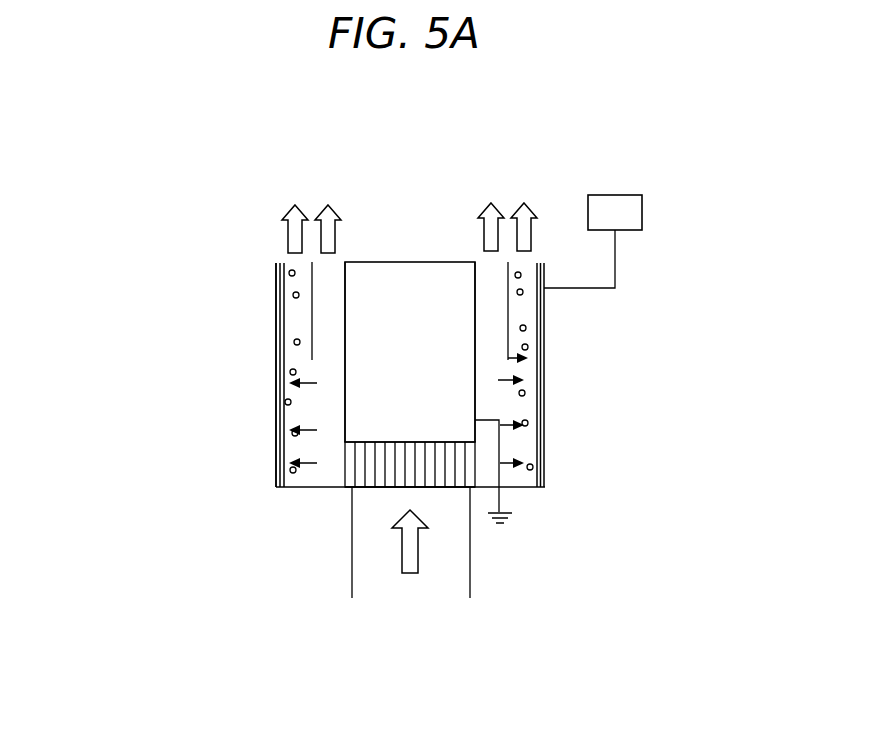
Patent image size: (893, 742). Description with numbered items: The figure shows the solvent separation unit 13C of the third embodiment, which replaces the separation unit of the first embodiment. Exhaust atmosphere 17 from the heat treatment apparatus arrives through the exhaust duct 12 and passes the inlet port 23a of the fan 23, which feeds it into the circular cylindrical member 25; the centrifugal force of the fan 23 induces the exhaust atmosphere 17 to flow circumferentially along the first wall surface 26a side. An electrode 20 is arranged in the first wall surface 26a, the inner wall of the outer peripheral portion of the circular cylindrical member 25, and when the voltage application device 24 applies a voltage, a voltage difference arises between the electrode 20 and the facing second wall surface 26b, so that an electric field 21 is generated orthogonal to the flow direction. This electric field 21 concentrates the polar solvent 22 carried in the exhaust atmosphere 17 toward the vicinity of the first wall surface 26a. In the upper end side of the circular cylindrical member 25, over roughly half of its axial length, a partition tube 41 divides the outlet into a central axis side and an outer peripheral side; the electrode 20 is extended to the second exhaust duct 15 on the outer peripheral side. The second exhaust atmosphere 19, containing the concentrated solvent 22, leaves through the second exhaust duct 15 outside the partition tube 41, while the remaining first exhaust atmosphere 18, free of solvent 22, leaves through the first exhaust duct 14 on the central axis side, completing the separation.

The exhaust duct 12 is at (470, 565).
The solvent separation unit 13C is at (256, 321).
The first exhaust duct 14 is at (492, 300).
The second exhaust duct 15 is at (525, 340).
The exhaust atmosphere 17 is at (410, 575).
The first exhaust atmosphere 18 is at (483, 233).
The second exhaust atmosphere 19 is at (515, 210).
The electrode 20 is at (297, 353).
The electric field 21 is at (311, 385).
The solvent 22 is at (293, 295).
The fan 23 is at (343, 473).
The inlet port 23a is at (383, 488).
The voltage application device 24 is at (617, 195).
The circular cylindrical member 25 is at (543, 486).
The first wall surface 26a is at (276, 460).
The second wall surface 26b is at (473, 373).
The partition tube 41 is at (312, 325).